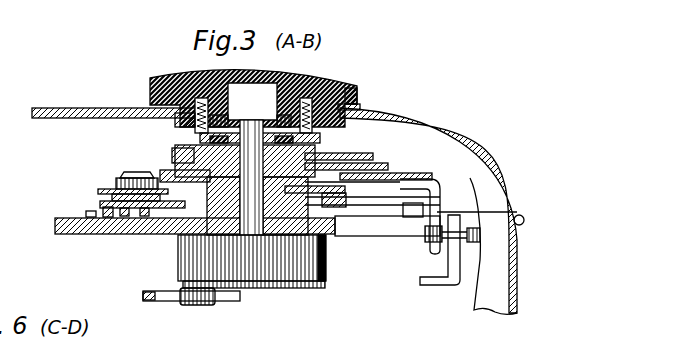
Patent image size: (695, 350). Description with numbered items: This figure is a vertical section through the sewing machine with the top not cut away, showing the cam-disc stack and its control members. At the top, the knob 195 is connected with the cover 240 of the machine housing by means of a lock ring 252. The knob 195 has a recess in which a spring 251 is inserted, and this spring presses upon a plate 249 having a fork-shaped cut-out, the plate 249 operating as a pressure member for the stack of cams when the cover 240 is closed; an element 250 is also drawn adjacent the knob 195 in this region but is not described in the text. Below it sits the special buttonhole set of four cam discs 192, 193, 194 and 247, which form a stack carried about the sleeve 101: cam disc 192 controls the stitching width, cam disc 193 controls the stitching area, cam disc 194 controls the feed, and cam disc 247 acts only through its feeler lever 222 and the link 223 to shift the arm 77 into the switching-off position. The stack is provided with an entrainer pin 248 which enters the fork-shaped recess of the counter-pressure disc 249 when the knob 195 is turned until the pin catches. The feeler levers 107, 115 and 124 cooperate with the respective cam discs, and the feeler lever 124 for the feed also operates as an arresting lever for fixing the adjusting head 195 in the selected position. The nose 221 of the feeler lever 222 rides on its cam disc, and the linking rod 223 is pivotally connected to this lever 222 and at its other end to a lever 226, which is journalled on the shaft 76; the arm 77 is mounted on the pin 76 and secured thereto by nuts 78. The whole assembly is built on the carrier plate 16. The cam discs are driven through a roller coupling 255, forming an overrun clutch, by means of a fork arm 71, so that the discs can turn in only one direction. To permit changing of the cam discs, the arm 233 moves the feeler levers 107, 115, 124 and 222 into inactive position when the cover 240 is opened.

The cover 240 is at (42, 108).
The knob 195 is at (150, 92).
The spring 251 is at (355, 95).
The cap flange 250 is at (356, 106).
The lock ring 252 is at (183, 122).
The plate 249 is at (315, 143).
The entrainer pin 248 is at (193, 143).
The cam disc 194 is at (222, 189).
The cam disc 193 is at (145, 162).
The lever 226 is at (104, 212).
The arm 77 is at (88, 217).
The shaft 76 is at (126, 212).
The nuts 78 is at (146, 212).
The carrier plate 16 is at (55, 225).
The cam disc 192 is at (175, 230).
The arm 233 is at (278, 240).
The sleeve 101 is at (242, 240).
The feeler lever 115 is at (380, 175).
The feeler lever 222 is at (352, 192).
The feeler lever 107 is at (432, 178).
The feeler lever 124 is at (450, 177).
The nose 221 is at (305, 281).
The linking rod 223 is at (321, 283).
The cam disc 247 is at (210, 301).
The fork arm 71 is at (165, 298).
The roller coupling 255 is at (180, 273).